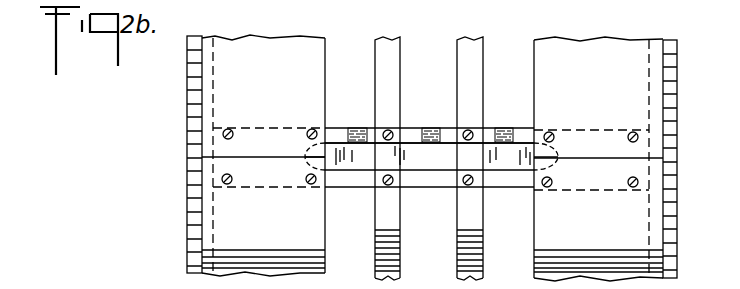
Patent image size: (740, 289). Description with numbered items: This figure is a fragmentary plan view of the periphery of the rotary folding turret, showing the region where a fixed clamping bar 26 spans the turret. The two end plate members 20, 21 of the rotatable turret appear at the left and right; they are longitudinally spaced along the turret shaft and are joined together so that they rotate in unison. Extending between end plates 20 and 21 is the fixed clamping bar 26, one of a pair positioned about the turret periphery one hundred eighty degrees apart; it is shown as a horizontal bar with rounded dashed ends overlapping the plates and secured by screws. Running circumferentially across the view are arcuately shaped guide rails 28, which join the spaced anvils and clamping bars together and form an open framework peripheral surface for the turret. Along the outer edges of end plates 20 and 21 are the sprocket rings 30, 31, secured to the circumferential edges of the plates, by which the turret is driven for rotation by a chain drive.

The end plate member 20 is at (207, 86).
The end plate member 21 is at (655, 104).
The fixed clamping bar 26 is at (435, 165).
The guide rail 28 is at (462, 74).
The sprocket ring 30 is at (187, 219).
The sprocket ring 31 is at (667, 228).